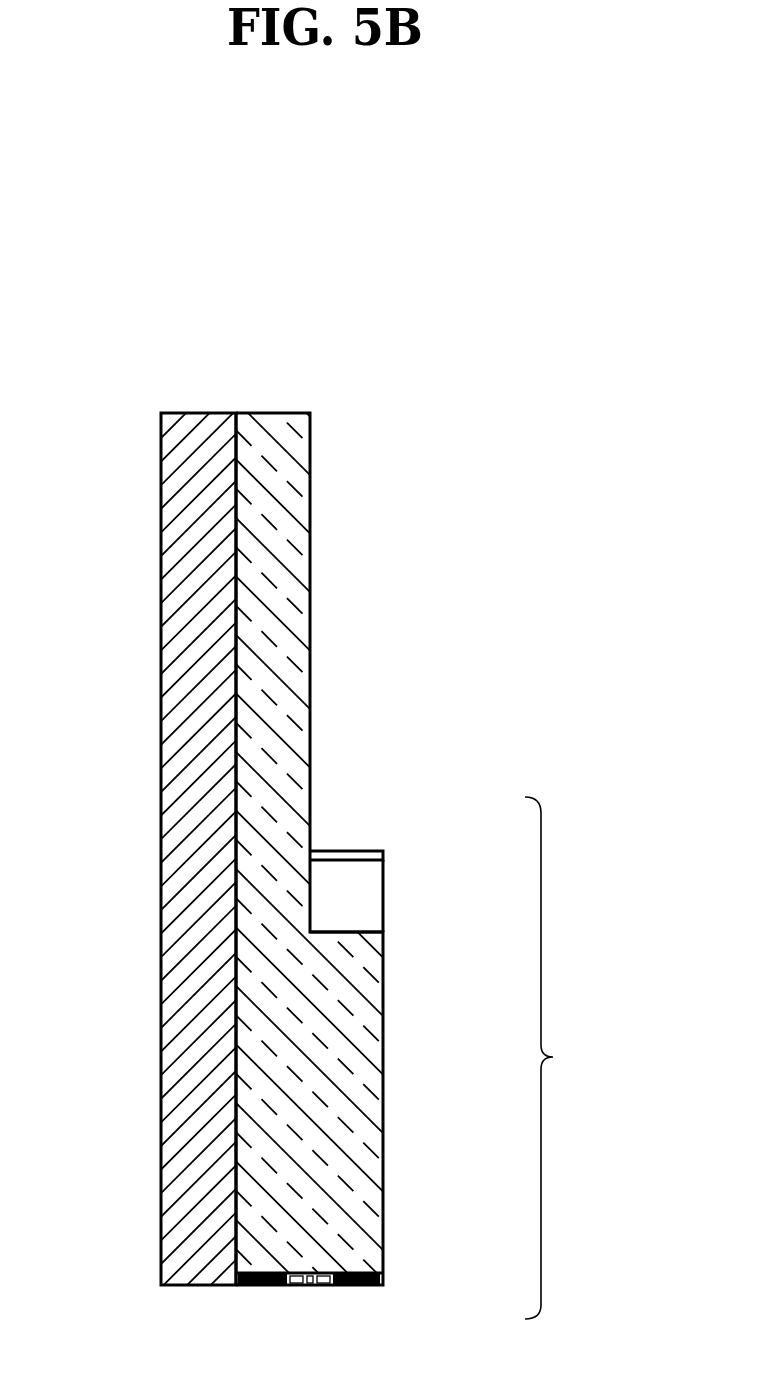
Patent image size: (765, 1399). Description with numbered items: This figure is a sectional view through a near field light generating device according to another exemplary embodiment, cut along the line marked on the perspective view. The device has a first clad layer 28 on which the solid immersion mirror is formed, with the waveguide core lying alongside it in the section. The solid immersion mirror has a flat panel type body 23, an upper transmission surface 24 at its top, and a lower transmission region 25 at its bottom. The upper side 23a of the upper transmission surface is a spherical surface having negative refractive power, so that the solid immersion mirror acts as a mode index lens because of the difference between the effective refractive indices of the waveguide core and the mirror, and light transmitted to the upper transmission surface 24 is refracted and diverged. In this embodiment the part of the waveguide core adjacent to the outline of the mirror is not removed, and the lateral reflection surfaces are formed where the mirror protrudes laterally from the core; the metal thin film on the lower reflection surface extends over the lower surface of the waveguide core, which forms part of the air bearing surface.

The first clad layer 28 is at (173, 743).
The upper transmission surface 24 is at (300, 887).
The upper side of the upper transmission surface 23a is at (350, 935).
The flat panel type body 23 is at (372, 1040).
The lower transmission region 25 is at (317, 1287).